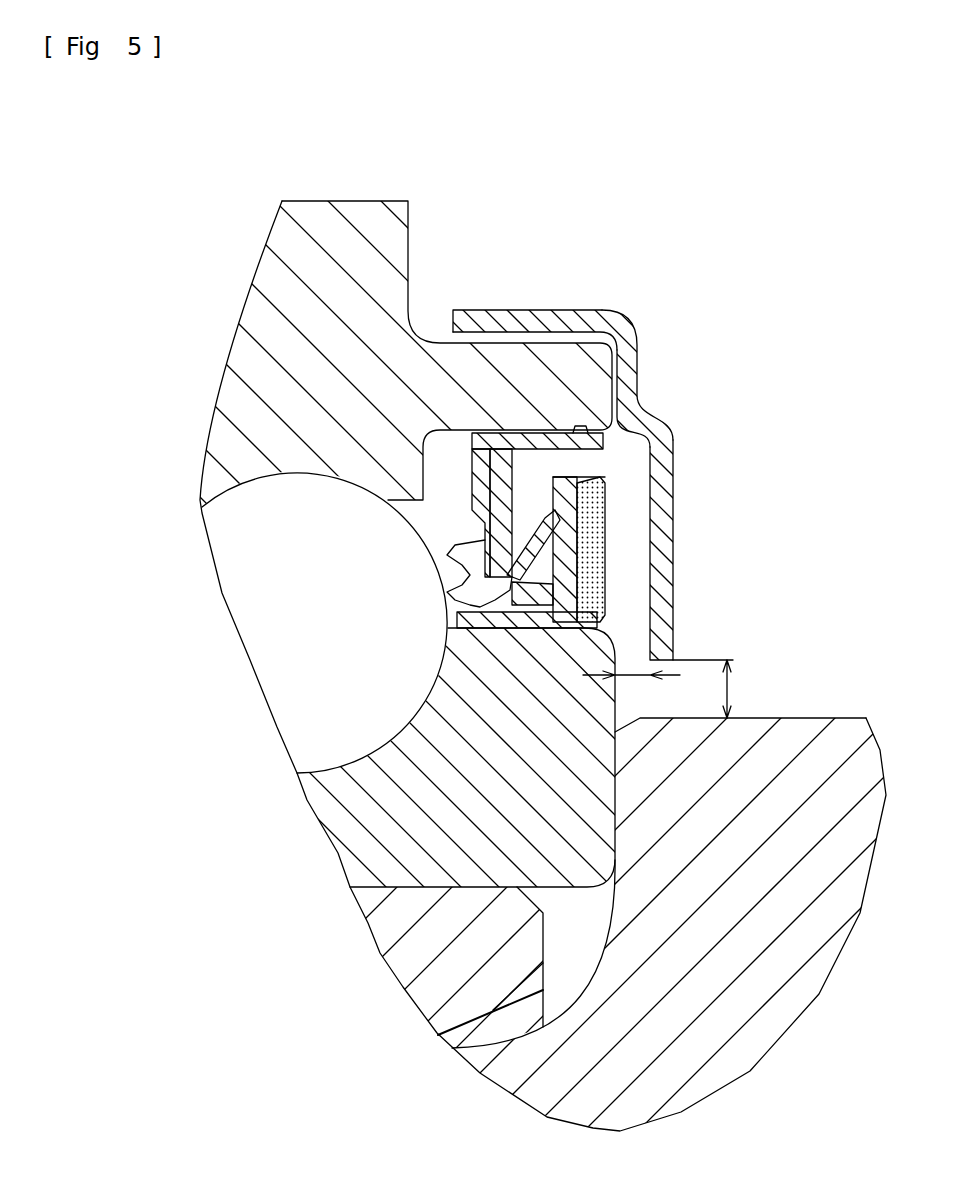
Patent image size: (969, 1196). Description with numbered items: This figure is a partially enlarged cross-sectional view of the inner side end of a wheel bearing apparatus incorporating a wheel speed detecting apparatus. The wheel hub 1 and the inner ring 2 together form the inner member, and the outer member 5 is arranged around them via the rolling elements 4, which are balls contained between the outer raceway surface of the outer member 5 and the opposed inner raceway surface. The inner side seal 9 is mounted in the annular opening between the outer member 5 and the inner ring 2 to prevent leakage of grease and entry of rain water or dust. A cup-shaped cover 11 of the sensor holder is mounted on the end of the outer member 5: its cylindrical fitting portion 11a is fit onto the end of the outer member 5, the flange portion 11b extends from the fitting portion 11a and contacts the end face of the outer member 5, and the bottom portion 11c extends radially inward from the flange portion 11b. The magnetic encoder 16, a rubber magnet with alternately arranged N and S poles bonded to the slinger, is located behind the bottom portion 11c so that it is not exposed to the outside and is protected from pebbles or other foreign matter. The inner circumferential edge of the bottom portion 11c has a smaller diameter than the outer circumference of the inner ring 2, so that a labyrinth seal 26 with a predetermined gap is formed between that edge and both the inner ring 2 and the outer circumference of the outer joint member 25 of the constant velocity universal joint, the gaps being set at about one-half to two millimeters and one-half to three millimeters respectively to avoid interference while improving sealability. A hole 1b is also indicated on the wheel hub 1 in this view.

The wheel hub 1 is at (366, 928).
The hole of hub wheel 1b is at (452, 870).
The inner ring 2 is at (413, 792).
The rolling element (ball) 4 is at (297, 542).
The outer member 5 is at (321, 240).
The inner side seal 9 is at (450, 529).
The cover 11 is at (575, 290).
The cylindrical fitting portion 11a is at (497, 310).
The flange portion 11b is at (634, 372).
The bottom portion 11c is at (663, 510).
The magnetic encoder 16 is at (587, 533).
The outer joint member 25 is at (790, 795).
The labyrinth seal 26 is at (660, 695).